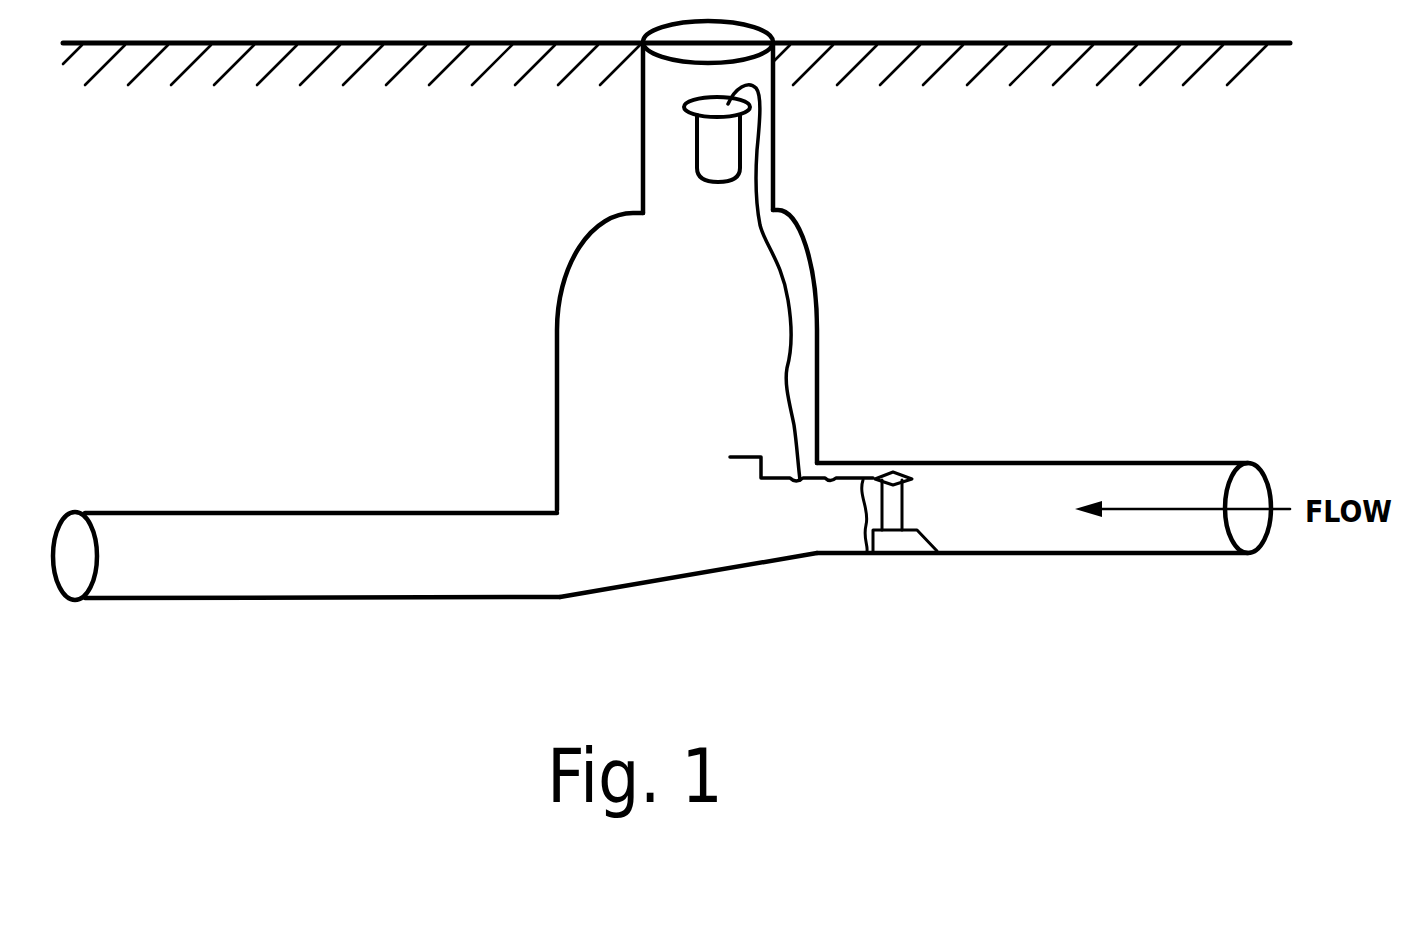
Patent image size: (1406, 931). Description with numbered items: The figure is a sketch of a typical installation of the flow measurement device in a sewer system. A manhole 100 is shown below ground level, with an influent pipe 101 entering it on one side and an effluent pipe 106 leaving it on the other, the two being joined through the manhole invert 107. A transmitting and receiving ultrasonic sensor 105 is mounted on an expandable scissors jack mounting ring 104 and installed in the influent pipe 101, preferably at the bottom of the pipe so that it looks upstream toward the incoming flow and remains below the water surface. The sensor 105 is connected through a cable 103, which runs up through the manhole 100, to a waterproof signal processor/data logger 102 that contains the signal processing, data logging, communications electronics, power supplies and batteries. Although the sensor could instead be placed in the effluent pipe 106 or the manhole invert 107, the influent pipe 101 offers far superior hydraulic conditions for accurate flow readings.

The manhole 100 is at (641, 112).
The influent pipe 101 is at (990, 463).
The signal processor/data logger 102 is at (694, 147).
The cable 103 is at (768, 240).
The expandable scissors jack mounting ring 104 is at (752, 470).
The transmitting and receiving ultrasonic sensor 105 is at (907, 545).
The effluent pipe 106 is at (285, 598).
The manhole invert 107 is at (730, 570).